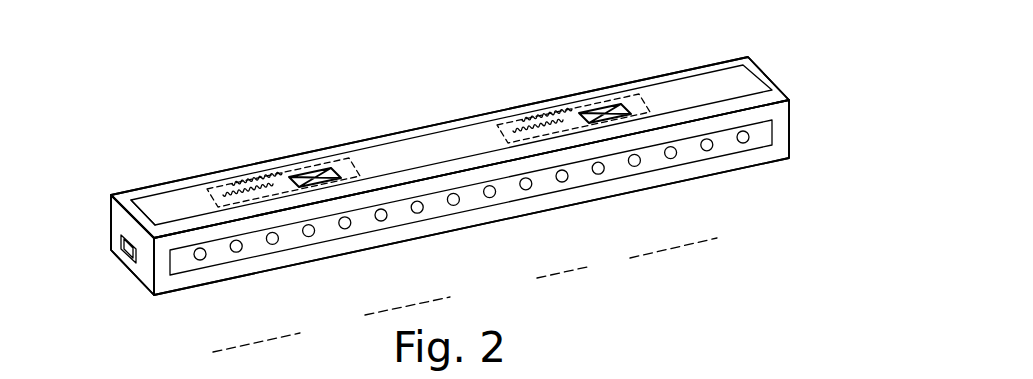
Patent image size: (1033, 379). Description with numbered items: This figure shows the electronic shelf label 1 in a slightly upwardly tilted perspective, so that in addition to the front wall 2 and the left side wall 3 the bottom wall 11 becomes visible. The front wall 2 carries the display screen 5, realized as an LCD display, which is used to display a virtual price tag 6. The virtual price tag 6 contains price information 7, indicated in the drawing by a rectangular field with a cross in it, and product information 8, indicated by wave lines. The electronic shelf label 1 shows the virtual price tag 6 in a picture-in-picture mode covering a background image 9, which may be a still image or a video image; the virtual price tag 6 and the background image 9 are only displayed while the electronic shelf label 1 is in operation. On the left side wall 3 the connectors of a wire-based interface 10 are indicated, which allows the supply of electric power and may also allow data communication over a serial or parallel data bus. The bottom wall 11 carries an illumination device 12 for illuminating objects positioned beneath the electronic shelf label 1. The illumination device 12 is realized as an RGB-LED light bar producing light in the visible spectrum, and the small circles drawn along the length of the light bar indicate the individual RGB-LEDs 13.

The electronic shelf label 1 is at (785, 52).
The front wall 2 is at (772, 88).
The left side wall 3 is at (148, 276).
The display screen 5 is at (129, 211).
The virtual price tag 6 is at (358, 166).
The price information 7 is at (317, 178).
The product information 8 is at (243, 184).
The background image 9 is at (438, 148).
The wire-based interface 10 is at (123, 249).
The bottom wall 11 is at (782, 133).
The illumination device 12 is at (511, 196).
The RGB-LEDs 13 is at (201, 260).